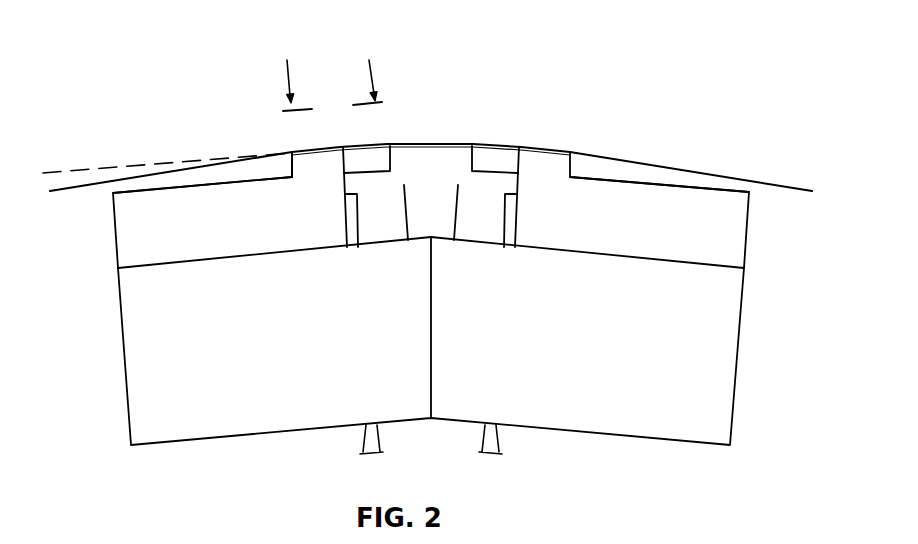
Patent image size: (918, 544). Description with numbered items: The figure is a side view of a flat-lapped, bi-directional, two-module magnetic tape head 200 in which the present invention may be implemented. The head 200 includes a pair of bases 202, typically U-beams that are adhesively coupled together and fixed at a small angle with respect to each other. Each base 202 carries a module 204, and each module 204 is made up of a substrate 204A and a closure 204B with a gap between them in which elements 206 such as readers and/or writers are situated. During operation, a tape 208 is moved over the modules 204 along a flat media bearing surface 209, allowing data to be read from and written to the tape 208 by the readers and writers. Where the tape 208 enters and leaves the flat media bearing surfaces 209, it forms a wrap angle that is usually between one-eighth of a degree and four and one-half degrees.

The two-module magnetic tape head 200 is at (166, 108).
The base 202 is at (122, 333).
The module 204 is at (115, 237).
The substrate 204A is at (175, 215).
The closure 204B is at (472, 150).
The elements 206 is at (342, 142).
The tape 208 is at (661, 168).
The media bearing surface 209 is at (294, 147).